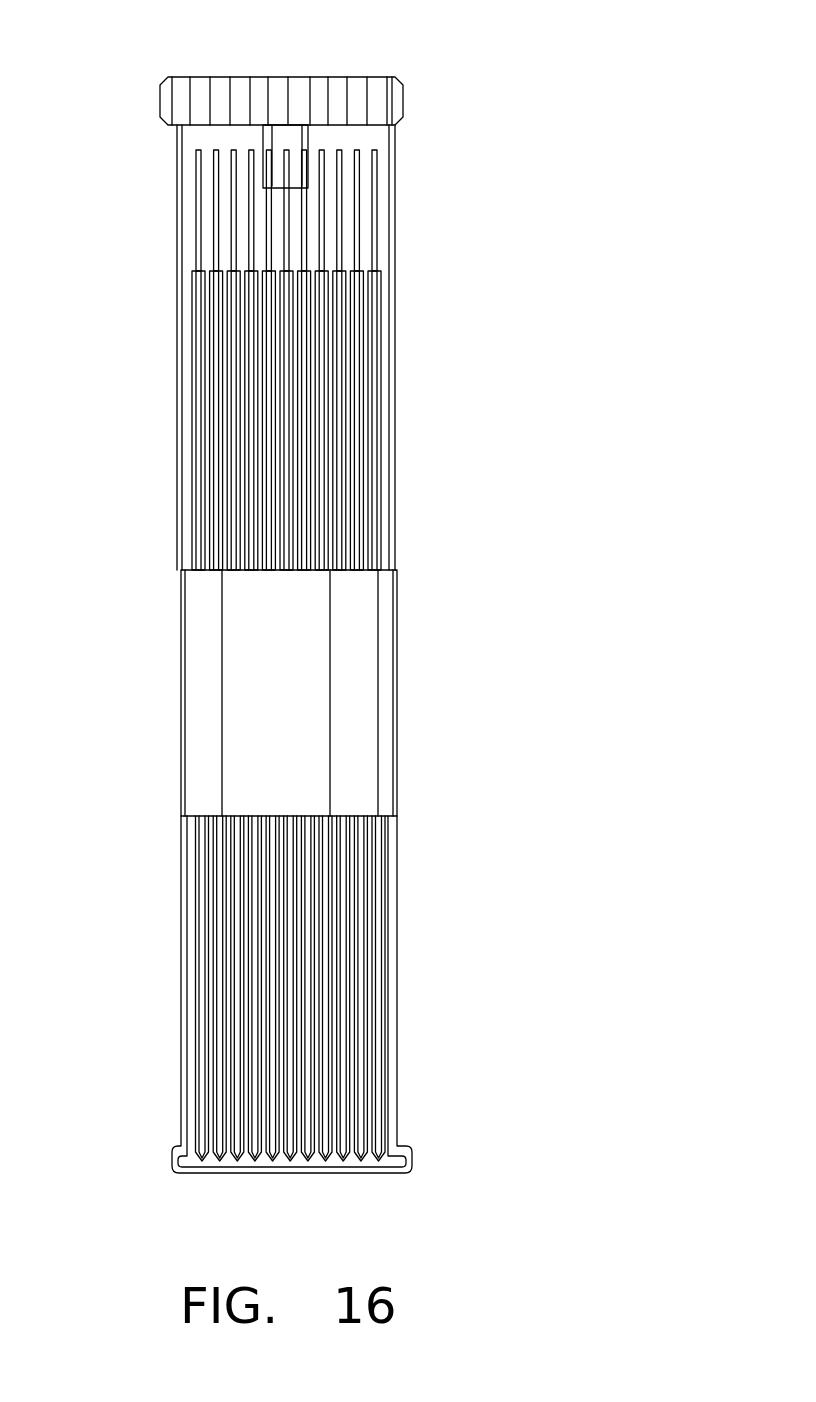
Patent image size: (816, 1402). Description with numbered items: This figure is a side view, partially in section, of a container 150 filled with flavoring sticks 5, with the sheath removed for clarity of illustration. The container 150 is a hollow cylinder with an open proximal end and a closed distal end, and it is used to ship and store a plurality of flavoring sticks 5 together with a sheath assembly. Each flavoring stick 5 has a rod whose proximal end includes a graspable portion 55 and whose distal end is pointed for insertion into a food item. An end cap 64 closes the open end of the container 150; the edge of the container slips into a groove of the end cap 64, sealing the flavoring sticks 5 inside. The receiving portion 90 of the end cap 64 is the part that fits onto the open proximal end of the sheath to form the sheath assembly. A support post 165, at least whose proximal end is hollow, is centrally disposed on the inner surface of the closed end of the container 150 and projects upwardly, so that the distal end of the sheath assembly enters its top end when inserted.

The end cap 64 is at (409, 83).
The receiving portion 90 is at (313, 144).
The graspable portion 55 is at (192, 215).
The flavoring stick 5 is at (194, 447).
The container 150 is at (401, 634).
The support post 165 is at (301, 1168).